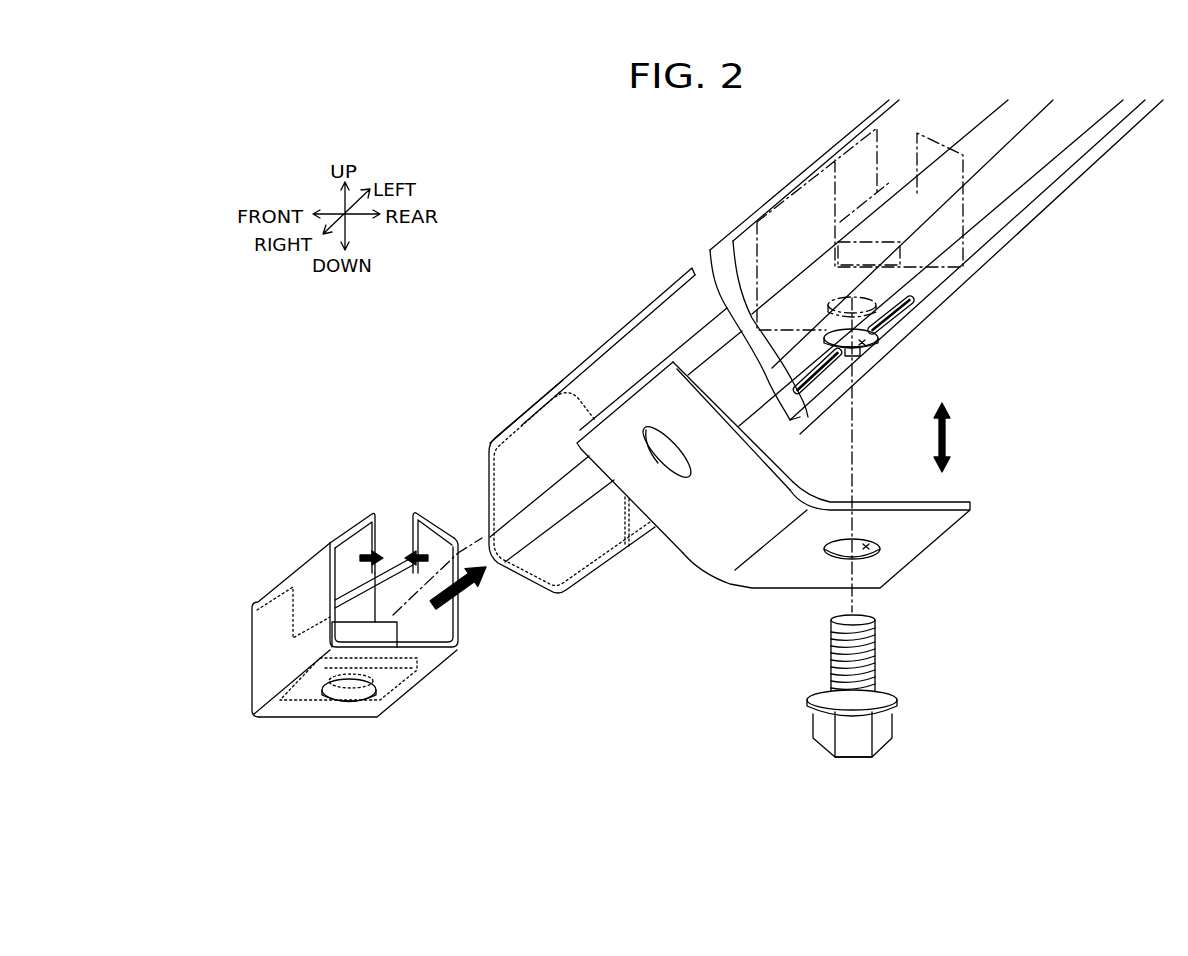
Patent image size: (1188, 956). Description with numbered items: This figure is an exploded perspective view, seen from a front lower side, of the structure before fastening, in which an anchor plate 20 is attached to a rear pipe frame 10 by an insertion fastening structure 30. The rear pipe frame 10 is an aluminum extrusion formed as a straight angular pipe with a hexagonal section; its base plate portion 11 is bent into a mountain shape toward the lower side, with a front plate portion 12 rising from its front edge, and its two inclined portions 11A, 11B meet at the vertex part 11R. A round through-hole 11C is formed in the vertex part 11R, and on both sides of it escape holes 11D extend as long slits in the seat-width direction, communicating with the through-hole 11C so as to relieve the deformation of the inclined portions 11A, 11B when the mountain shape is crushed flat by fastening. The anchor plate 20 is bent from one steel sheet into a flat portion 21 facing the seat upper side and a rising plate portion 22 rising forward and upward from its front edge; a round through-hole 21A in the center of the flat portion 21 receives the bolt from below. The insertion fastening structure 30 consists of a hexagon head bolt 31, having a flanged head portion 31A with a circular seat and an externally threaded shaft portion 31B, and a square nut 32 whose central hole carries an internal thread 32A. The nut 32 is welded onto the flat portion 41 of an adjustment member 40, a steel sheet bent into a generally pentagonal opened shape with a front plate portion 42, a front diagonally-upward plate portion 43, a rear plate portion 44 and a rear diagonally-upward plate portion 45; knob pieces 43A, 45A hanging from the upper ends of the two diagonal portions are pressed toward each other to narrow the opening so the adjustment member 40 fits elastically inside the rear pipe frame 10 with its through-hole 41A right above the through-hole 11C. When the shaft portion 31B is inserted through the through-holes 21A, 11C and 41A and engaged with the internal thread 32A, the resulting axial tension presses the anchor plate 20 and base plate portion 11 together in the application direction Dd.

The rear pipe frame 10 is at (728, 233).
The base plate portion 11 is at (1165, 254).
The inclined portion 11A is at (1040, 143).
The inclined portion 11B is at (1107, 145).
The vertex part 11R is at (995, 222).
The through-hole 11C is at (862, 356).
The escape hole 11D is at (898, 325).
The front plate portion 12 is at (538, 437).
The anchor plate 20 is at (745, 577).
The flat portion 21 is at (790, 575).
The through-hole 21A is at (885, 548).
The rising plate portion 22 is at (697, 540).
The insertion fastening structure 30 is at (928, 711).
The bolt 31 is at (812, 732).
The flanged head portion 31A is at (855, 720).
The shaft portion 31B is at (875, 652).
The nut 32 is at (382, 639).
The internal thread 32A is at (367, 698).
The adjustment member 40 is at (297, 562).
The flat portion 41 is at (415, 677).
The through-hole 41A is at (343, 700).
The front plate portion 42 is at (262, 647).
The front diagonally-upward plate portion 43 is at (340, 540).
The knob piece 43A is at (360, 547).
The rear plate portion 44 is at (440, 623).
The rear diagonally-upward plate portion 45 is at (435, 543).
The knob piece 45A is at (400, 543).
The application direction Dd is at (950, 440).